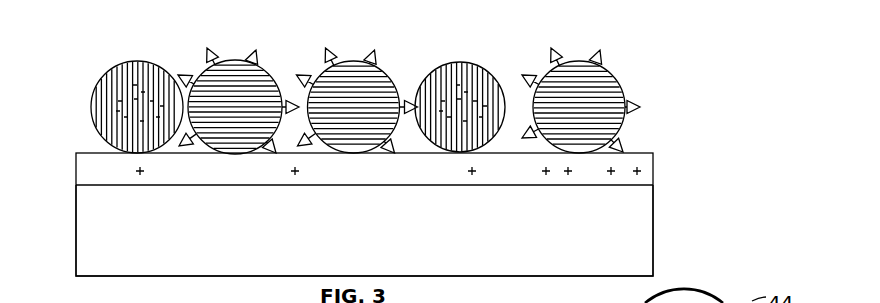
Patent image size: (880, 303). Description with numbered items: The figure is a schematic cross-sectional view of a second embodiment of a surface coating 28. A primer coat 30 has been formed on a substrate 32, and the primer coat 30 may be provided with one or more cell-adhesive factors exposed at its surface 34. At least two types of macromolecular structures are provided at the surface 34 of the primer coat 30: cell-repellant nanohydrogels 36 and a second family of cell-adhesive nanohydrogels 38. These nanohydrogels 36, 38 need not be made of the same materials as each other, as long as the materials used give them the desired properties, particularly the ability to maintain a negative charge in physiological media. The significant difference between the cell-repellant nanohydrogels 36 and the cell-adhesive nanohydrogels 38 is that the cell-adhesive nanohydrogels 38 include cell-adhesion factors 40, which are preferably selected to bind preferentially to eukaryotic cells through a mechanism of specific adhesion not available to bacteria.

The surface coating 28 is at (665, 228).
The primer coat 30 is at (76, 172).
The substrate 32 is at (76, 232).
The surface of the primer coat 34 is at (88, 152).
The cell-repellant nanohydrogels 36 is at (123, 66).
The cell-adhesive nanohydrogels 38 is at (268, 80).
The cell-adhesion factors 40 is at (180, 76).